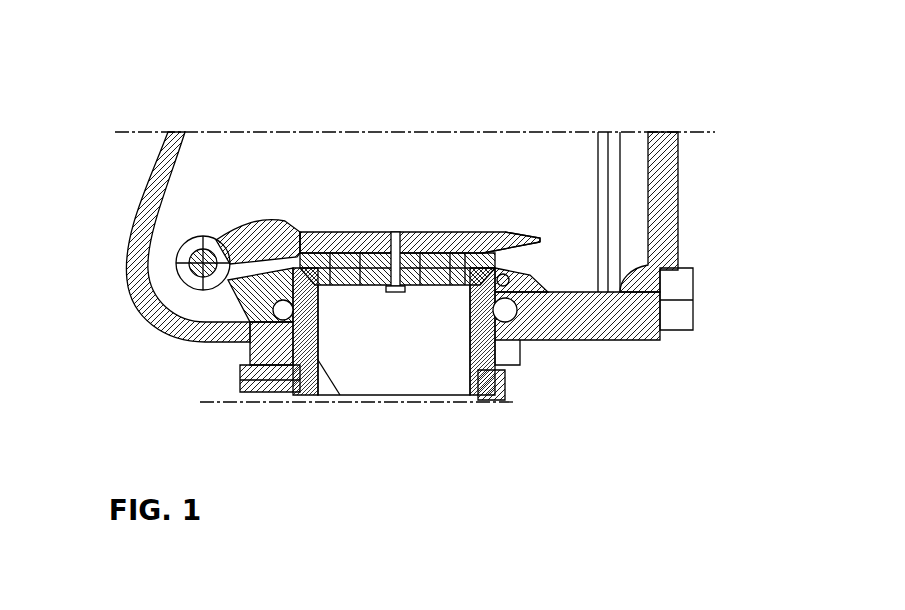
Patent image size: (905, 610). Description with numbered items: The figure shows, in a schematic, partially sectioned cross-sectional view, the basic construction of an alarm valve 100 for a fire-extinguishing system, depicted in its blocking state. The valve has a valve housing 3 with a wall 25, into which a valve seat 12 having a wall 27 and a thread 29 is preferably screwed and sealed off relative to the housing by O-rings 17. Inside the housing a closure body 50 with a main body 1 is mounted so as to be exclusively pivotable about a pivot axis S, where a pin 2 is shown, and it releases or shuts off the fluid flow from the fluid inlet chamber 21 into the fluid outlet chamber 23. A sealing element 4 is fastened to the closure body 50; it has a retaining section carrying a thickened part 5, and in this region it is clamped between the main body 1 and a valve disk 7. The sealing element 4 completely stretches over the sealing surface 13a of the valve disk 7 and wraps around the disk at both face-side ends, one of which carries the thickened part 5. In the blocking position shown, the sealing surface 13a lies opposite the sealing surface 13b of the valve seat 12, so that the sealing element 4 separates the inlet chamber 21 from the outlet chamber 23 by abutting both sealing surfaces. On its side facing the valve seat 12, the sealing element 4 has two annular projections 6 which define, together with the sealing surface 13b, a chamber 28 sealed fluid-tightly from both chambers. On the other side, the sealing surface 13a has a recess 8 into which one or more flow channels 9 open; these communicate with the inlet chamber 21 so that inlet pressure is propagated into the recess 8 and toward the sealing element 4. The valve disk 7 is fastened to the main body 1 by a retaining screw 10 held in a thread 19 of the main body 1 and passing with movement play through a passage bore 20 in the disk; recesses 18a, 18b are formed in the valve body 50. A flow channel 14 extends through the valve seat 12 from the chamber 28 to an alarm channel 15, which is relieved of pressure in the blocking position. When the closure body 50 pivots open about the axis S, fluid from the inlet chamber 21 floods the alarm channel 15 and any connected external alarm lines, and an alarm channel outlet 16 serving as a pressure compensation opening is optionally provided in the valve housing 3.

The alarm valve 100 is at (116, 72).
The fluid outlet chamber 23 is at (410, 152).
The valve housing 3 is at (132, 268).
The wall 25 is at (252, 343).
The valve seat 12 is at (296, 393).
The pivot axis S is at (198, 238).
The pin 2 is at (211, 250).
The closure body 50 is at (253, 222).
The main body 1 is at (298, 235).
The retaining screw 10 is at (396, 232).
The recess 8 is at (505, 245).
The sealing surface of the valve seat 13b is at (527, 240).
The sealing surface of the valve disk 13a is at (455, 262).
The recess of the valve body 18a is at (322, 250).
The recess of the valve body 18b is at (338, 288).
The valve disk 7 is at (343, 253).
The flow channel 9 is at (366, 253).
The thread 19 is at (406, 253).
The thickened part 5 is at (470, 262).
The sealing element 4 is at (482, 265).
The passage bore 20 is at (400, 290).
The flow channel 14 is at (316, 300).
The O-ring 17 is at (475, 330).
The fluid inlet chamber 21 is at (365, 350).
The wall 27 is at (318, 396).
The annular projection 6 is at (273, 292).
The chamber 28 is at (512, 278).
The alarm channel 15 is at (522, 292).
The alarm channel outlet 16 is at (540, 322).
The thread 29 is at (517, 336).